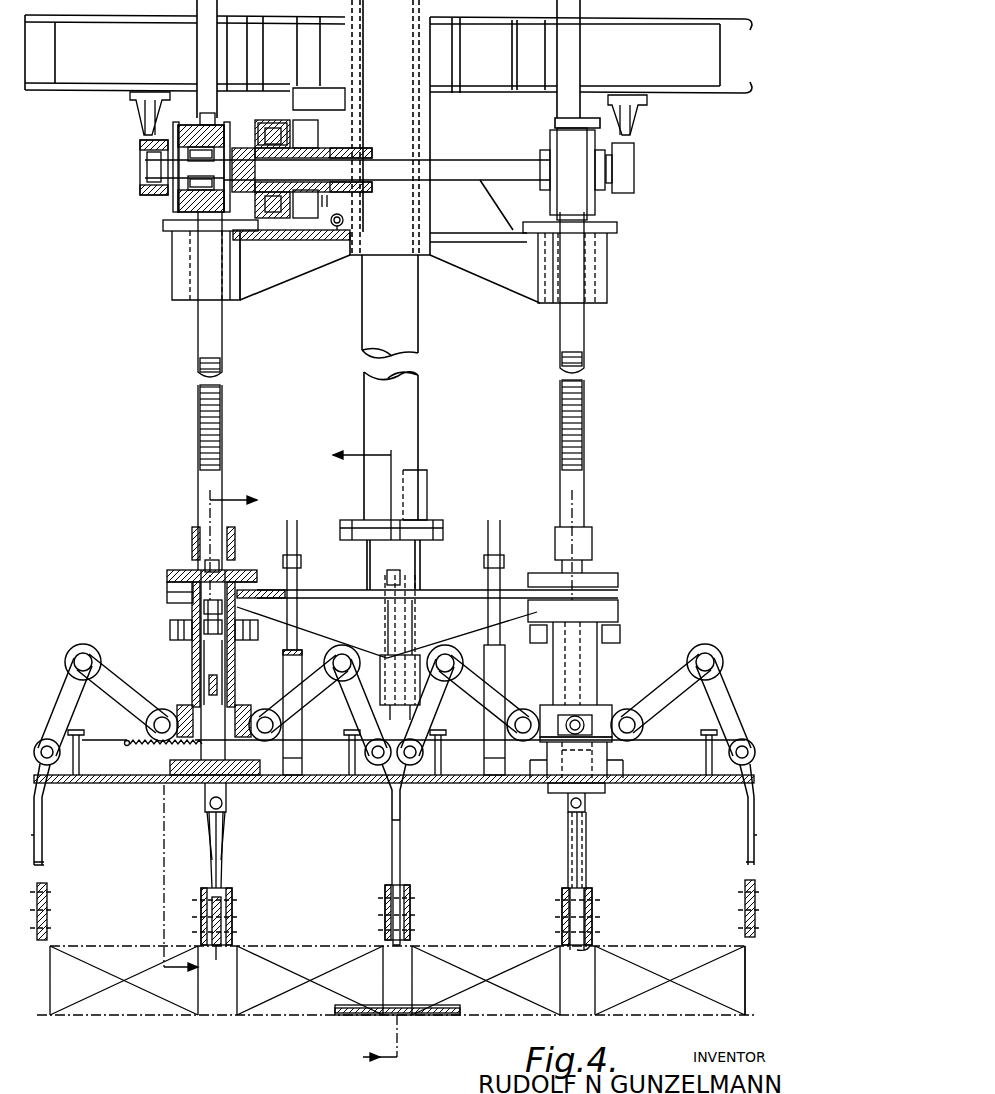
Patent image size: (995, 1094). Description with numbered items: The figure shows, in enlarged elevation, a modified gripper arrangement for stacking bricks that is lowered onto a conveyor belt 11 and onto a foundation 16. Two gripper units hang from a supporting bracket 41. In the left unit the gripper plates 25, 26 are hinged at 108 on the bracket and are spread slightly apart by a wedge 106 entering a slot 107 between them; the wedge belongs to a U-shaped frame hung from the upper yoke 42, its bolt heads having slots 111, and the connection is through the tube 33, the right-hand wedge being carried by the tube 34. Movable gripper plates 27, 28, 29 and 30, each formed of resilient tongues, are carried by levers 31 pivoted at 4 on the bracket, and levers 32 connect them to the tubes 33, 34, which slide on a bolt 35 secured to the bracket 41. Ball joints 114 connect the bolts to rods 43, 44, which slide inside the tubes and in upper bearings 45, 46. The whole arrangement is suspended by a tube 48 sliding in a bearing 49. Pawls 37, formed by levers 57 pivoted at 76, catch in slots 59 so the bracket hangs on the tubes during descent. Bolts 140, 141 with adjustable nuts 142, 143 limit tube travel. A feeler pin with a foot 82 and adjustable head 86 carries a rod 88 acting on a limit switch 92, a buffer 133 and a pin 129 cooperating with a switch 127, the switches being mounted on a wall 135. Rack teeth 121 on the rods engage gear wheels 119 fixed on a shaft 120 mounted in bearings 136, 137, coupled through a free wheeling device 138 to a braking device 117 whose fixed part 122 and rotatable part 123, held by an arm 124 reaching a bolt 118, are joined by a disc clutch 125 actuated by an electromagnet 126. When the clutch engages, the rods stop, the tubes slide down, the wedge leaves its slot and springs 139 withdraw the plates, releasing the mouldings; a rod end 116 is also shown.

The pivot 4 is at (53, 745).
The conveyor belt 11 is at (752, 1013).
The foundation block 16 is at (660, 948).
The gripper plate 25 is at (207, 861).
The gripper plate 26 is at (224, 860).
The gripper plate 27 is at (50, 904).
The gripper plate 28 is at (383, 906).
The gripper plate 29 is at (410, 901).
The gripper plate 30 is at (745, 897).
The lever 31 is at (60, 714).
The lever 32 is at (101, 667).
The tube 33 is at (192, 615).
The tube 34 is at (592, 652).
The bolt 35 is at (223, 664).
The pawl 37 is at (193, 677).
The supporting bracket 41 is at (92, 783).
The upper yoke 42 is at (336, 592).
The rod 43 is at (575, 492).
The rod 44 is at (205, 476).
The upper bearing 45 is at (597, 280).
The upper bearing 46 is at (200, 260).
The tube 48 is at (420, 387).
The sliding bearing 49 is at (352, 258).
The lever 57 is at (246, 640).
The slot 59 is at (222, 691).
The pivot 76 is at (252, 631).
The foot 82 is at (437, 1015).
The adjustable head 86 is at (400, 583).
The rod 88 is at (400, 660).
The limit switch 92 is at (422, 660).
The wedge 106 is at (231, 909).
The slot 107 is at (222, 821).
The hinge 108 is at (206, 804).
The slot 111 is at (584, 712).
The ball joint 114 is at (190, 608).
The rod end 116 is at (215, 947).
The braking device 117 is at (248, 140).
The bolt 118 is at (335, 227).
The gear wheel 119 is at (205, 120).
The shaft 120 is at (462, 168).
The rack teeth 121 is at (198, 406).
The brake part 122 is at (245, 245).
The brake part 123 is at (348, 150).
The arm 124 is at (358, 207).
The disc clutch 125 is at (273, 135).
The electromagnet 126 is at (305, 118).
The switch 127 is at (382, 665).
The pin 129 is at (421, 554).
The adjustable buffer 133 is at (425, 505).
The wall 135 is at (410, 670).
The bearing 136 is at (625, 152).
The bearing 137 is at (152, 197).
The free wheeling device 138 is at (183, 207).
The spring 139 is at (133, 748).
The bolt 140 is at (498, 660).
The bolt 141 is at (298, 665).
The adjustable nut 142 is at (497, 560).
The adjustable nut 143 is at (293, 560).